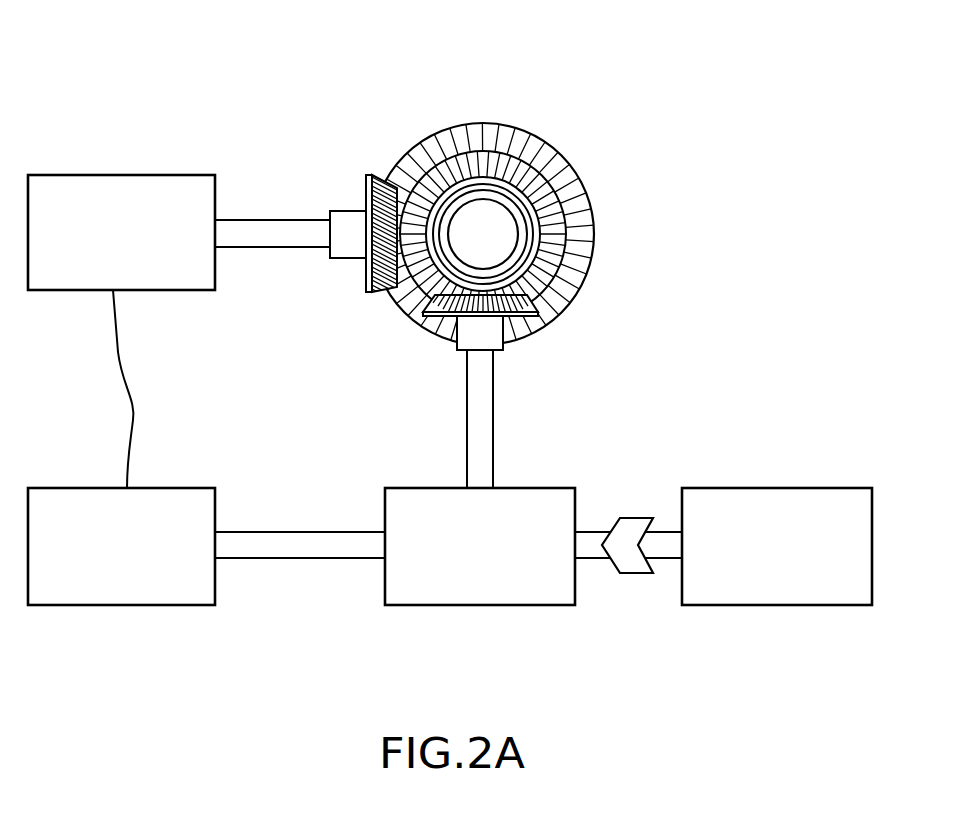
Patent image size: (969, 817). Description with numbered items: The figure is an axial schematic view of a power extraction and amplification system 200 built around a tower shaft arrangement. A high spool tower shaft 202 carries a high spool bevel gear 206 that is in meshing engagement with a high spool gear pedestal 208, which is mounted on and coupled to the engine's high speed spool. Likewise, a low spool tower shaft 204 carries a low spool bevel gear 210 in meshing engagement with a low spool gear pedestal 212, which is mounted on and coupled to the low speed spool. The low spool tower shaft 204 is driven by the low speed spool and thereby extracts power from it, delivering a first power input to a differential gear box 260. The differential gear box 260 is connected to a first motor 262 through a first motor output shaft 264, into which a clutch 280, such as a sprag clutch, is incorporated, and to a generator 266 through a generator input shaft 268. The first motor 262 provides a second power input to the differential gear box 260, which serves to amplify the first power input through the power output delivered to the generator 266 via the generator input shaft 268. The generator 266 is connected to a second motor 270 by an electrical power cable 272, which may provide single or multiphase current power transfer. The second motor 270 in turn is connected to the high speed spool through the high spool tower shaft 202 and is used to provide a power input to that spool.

The power extraction and amplification system 200 is at (207, 88).
The high spool tower shaft 202 is at (250, 220).
The low spool tower shaft 204 is at (467, 410).
The high spool bevel gear 206 is at (367, 196).
The high spool gear pedestal 208 is at (543, 156).
The low spool bevel gear 210 is at (527, 314).
The low spool gear pedestal 212 is at (543, 216).
The differential gear box 260 is at (461, 559).
The first motor 262 is at (760, 559).
The first motor output shaft 264 is at (667, 559).
The generator 266 is at (103, 559).
The generator input shaft 268 is at (288, 559).
The second motor 270 is at (103, 246).
The electrical power cable 272 is at (118, 352).
The clutch 280 is at (630, 530).